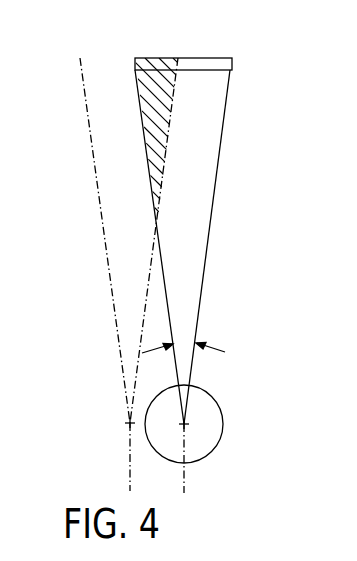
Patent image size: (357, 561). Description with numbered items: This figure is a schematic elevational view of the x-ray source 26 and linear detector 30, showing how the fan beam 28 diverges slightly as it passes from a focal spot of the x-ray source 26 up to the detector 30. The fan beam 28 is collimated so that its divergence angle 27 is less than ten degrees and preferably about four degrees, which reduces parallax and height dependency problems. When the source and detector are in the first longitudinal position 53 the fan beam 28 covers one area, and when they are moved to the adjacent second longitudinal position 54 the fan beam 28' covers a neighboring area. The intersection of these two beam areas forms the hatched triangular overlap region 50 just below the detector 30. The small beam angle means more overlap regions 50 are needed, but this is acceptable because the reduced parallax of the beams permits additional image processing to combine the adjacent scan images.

The x-ray source 26 is at (208, 420).
The beam angle 27 is at (186, 343).
The fan beam 28 is at (203, 247).
The fan beam 28' is at (84, 240).
The detector 30 is at (208, 58).
The triangular overlap region 50 is at (138, 88).
The first longitudinal position 53 is at (185, 478).
The second longitudinal position 54 is at (130, 468).